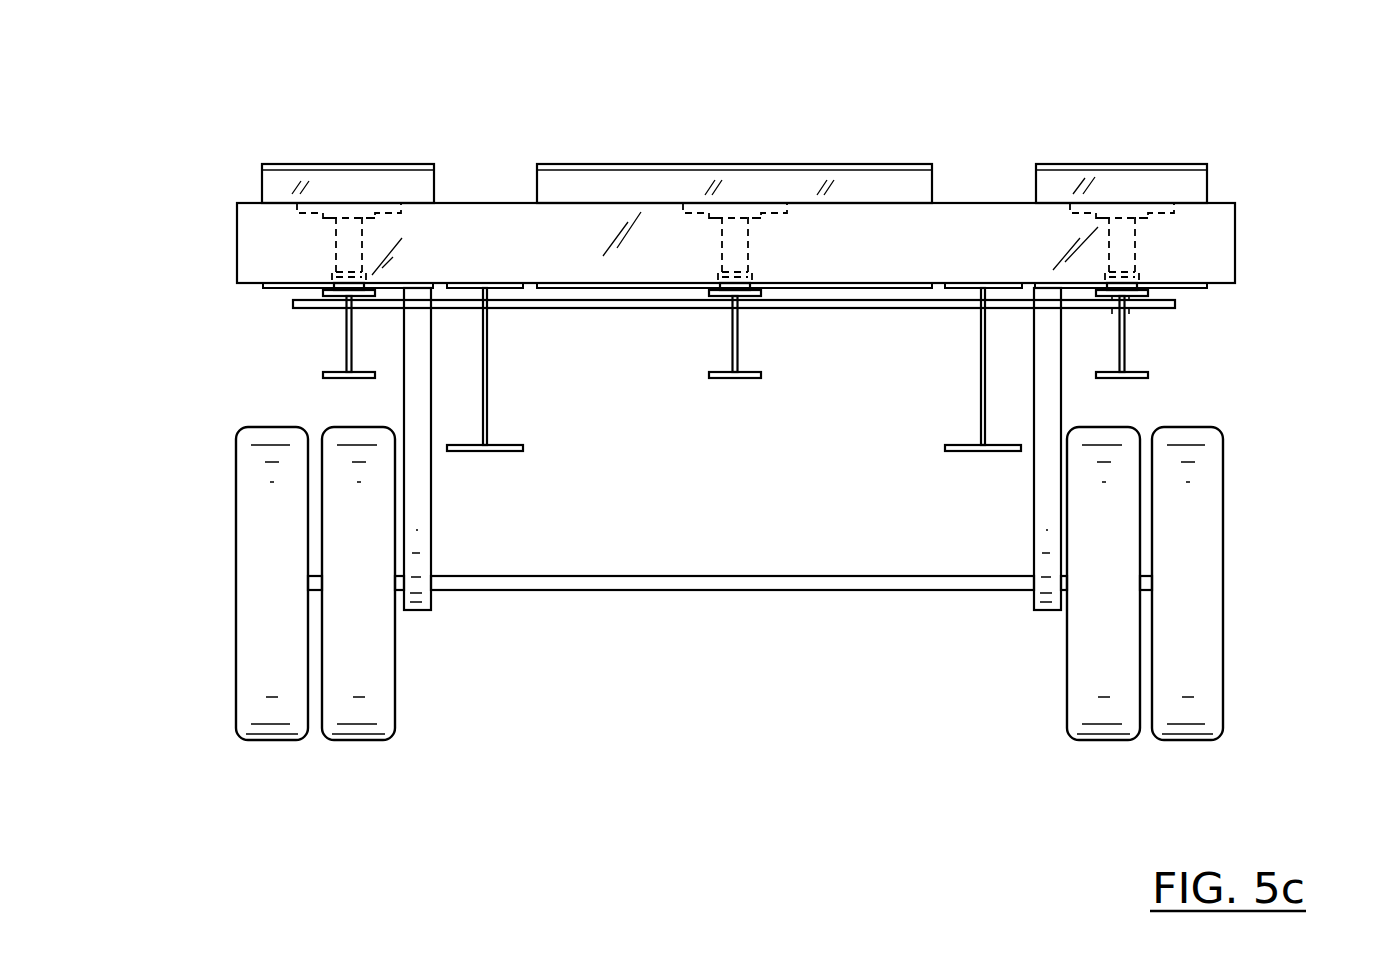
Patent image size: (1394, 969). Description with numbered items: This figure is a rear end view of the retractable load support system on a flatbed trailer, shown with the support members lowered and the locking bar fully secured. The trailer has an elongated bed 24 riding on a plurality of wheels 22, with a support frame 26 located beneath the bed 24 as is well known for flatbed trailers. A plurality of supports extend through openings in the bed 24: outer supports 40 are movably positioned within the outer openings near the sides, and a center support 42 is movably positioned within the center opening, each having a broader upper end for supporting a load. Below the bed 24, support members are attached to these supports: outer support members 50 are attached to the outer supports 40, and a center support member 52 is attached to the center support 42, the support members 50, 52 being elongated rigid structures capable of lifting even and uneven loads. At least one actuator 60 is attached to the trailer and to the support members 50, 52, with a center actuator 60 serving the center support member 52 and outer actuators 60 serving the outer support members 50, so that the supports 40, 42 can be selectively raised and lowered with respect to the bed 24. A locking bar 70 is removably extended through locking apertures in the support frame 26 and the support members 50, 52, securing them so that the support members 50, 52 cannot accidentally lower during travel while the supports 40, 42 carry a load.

The wheels 22 is at (259, 703).
The bed 24 is at (483, 203).
The support frame 26 is at (507, 451).
The outer supports 40 is at (387, 177).
The center supports 42 is at (650, 178).
The outer support members 50 is at (348, 332).
The center support member 52 is at (735, 342).
The actuator 60 is at (345, 254).
The locking bar 70 is at (298, 302).